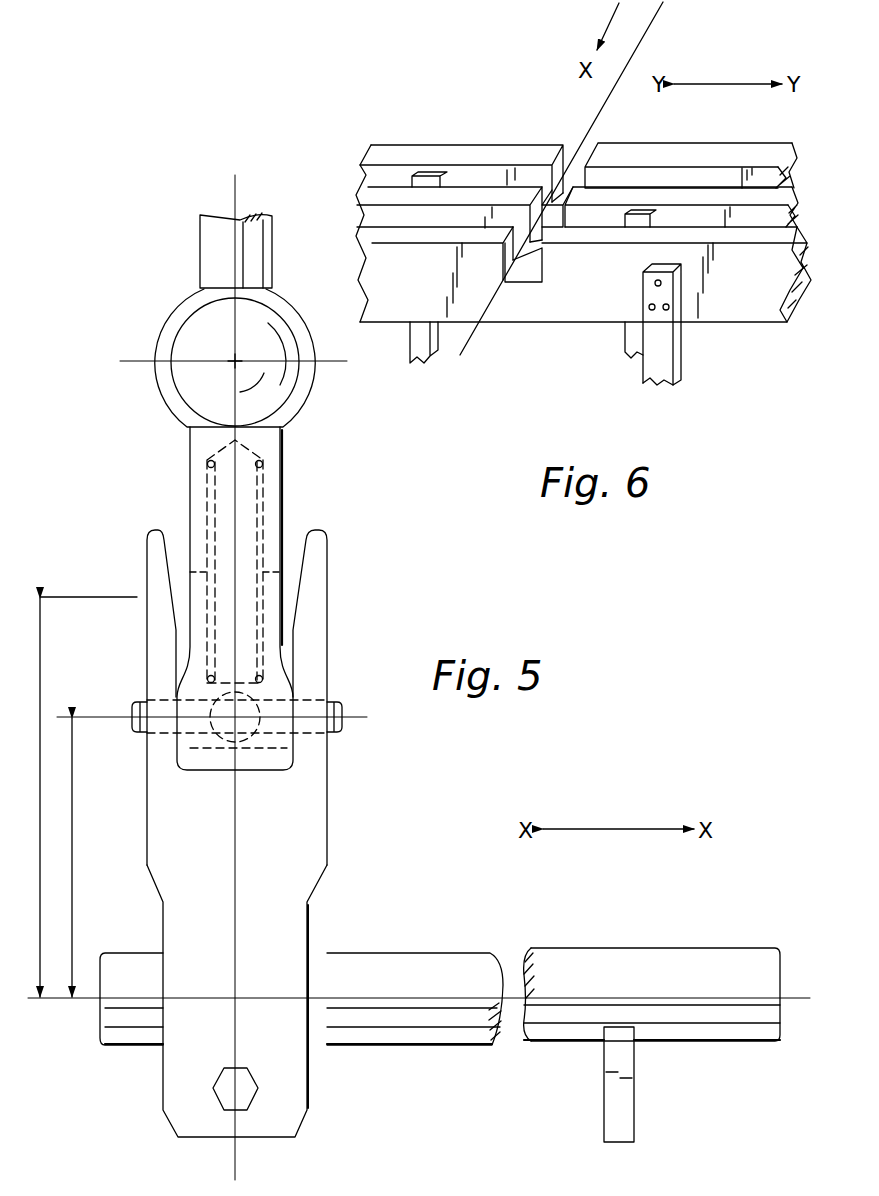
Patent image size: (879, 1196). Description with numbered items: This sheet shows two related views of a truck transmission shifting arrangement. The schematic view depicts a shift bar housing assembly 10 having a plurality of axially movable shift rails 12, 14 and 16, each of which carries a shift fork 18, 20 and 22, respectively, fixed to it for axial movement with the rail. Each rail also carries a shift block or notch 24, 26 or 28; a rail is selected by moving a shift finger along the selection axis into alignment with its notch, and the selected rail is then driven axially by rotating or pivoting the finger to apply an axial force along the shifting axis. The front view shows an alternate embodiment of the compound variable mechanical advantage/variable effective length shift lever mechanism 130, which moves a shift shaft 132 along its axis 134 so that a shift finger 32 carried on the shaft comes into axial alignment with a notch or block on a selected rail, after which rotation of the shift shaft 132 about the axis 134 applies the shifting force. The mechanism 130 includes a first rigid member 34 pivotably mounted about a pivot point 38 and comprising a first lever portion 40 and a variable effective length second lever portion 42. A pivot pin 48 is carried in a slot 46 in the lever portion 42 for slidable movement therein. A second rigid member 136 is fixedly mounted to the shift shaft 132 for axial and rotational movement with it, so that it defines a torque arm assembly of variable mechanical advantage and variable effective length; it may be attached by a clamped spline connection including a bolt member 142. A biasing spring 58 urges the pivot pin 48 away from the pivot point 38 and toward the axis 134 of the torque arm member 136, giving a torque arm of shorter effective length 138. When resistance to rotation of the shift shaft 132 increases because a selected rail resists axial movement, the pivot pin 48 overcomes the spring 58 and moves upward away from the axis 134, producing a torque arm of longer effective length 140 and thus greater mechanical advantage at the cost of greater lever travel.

In FIG. 6, the shift bar housing assembly 10 is at (448, 102).
In FIG. 6, the shift rail 12 is at (668, 157).
In FIG. 6, the shift rail 14 is at (604, 196).
In FIG. 6, the shift rail 16 is at (742, 308).
In FIG. 6, the shift fork 18 is at (422, 347).
In FIG. 6, the shift fork 20 is at (627, 347).
In FIG. 6, the shift fork 22 is at (653, 370).
In FIG. 6, the shift block or notch 24 is at (556, 168).
In FIG. 6, the shift block or notch 26 is at (545, 213).
In FIG. 6, the shift block or notch 28 is at (533, 285).
In FIG. 5, the shift finger 32 is at (604, 1096).
In FIG. 5, the first rigid member 34 is at (146, 318).
In FIG. 5, the pivot point 38 is at (230, 366).
In FIG. 5, the first lever portion 40 is at (208, 243).
In FIG. 5, the second lever portion 42 is at (180, 441).
In FIG. 5, the slot 46 is at (200, 597).
In FIG. 5, the pivot pin 48 is at (138, 733).
In FIG. 5, the biasing spring 58 is at (207, 490).
In FIG. 5, the compound shifting mechanism 130 is at (186, 222).
In FIG. 5, the shift shaft 132 is at (362, 970).
In FIG. 5, the axis 134 is at (582, 995).
In FIG. 5, the second rigid member 136 is at (342, 812).
In FIG. 5, the effective length 138 is at (72, 922).
In FIG. 5, the effective length 140 is at (42, 678).
In FIG. 5, the bolt member 142 is at (220, 1095).